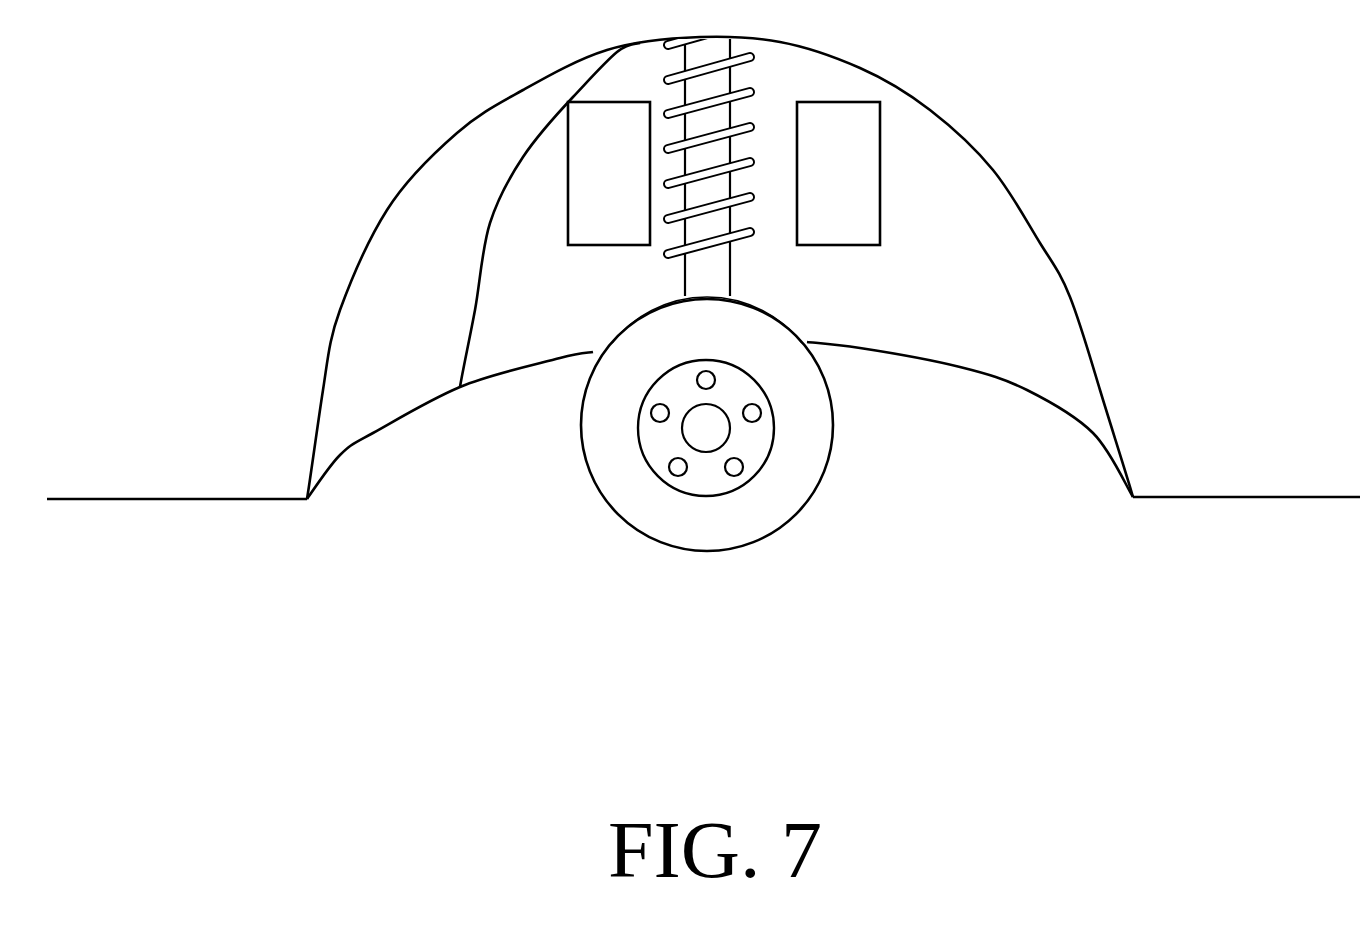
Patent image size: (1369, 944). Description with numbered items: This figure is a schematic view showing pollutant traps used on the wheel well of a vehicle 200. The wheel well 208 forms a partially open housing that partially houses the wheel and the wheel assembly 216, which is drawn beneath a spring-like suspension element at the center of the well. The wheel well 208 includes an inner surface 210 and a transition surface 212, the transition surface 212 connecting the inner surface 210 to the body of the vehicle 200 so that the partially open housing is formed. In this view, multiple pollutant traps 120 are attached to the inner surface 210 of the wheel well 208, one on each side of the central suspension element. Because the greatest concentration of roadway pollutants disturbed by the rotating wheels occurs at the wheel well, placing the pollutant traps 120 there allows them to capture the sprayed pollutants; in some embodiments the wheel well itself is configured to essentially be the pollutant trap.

The pollutant trap 120 is at (595, 165).
The vehicle 200 is at (1205, 498).
The wheel well 208 is at (1073, 297).
The inner surface 210 is at (985, 315).
The transition surface 212 is at (380, 390).
The wheel assembly 216 is at (652, 513).